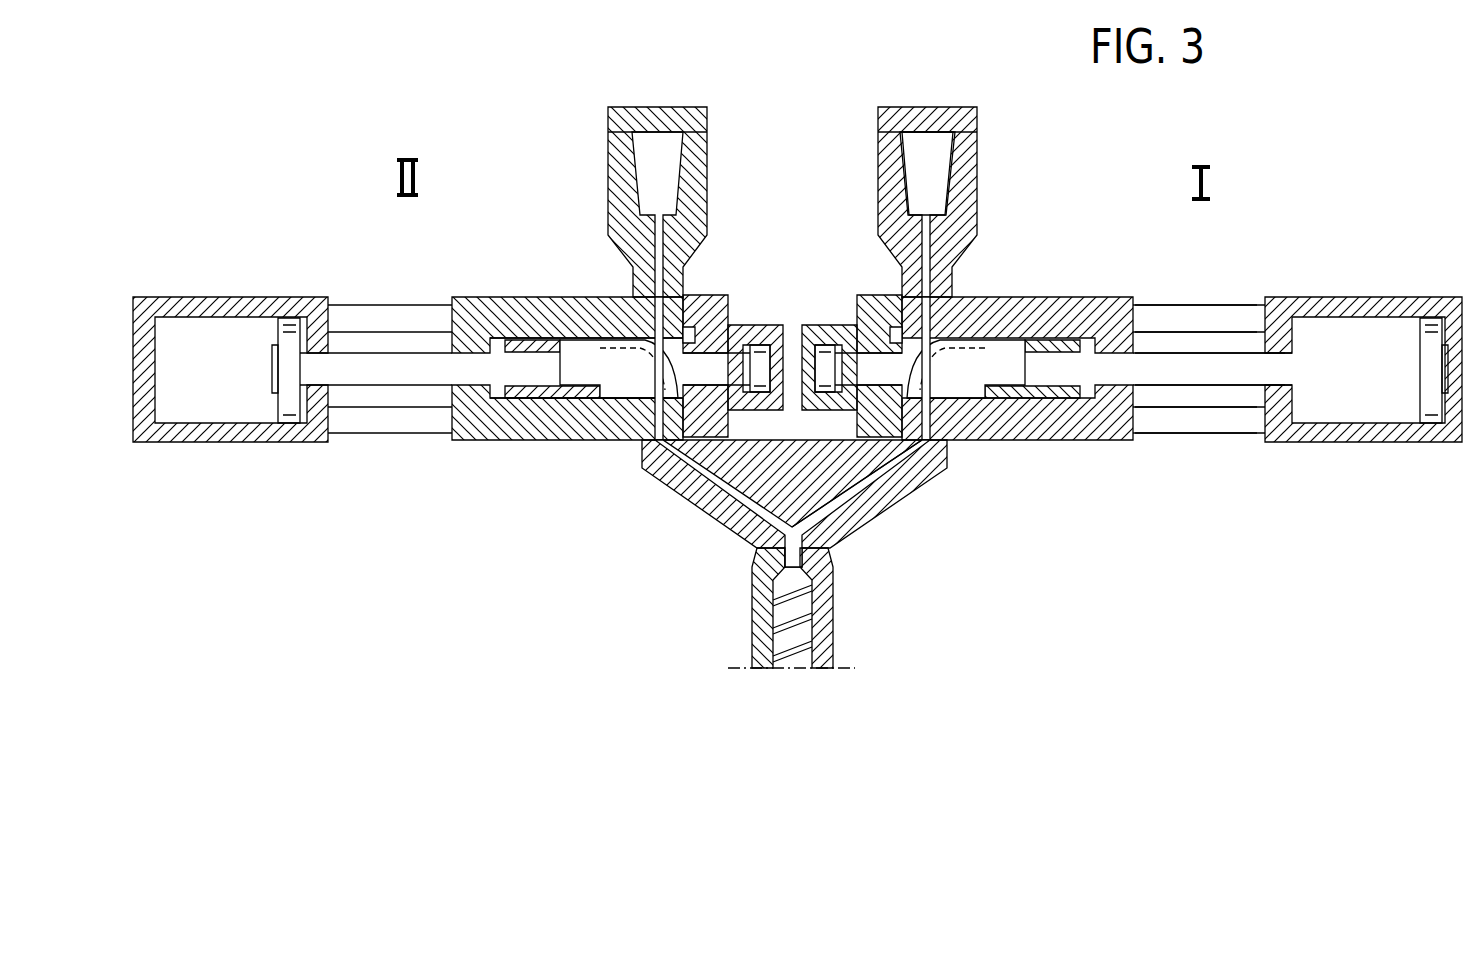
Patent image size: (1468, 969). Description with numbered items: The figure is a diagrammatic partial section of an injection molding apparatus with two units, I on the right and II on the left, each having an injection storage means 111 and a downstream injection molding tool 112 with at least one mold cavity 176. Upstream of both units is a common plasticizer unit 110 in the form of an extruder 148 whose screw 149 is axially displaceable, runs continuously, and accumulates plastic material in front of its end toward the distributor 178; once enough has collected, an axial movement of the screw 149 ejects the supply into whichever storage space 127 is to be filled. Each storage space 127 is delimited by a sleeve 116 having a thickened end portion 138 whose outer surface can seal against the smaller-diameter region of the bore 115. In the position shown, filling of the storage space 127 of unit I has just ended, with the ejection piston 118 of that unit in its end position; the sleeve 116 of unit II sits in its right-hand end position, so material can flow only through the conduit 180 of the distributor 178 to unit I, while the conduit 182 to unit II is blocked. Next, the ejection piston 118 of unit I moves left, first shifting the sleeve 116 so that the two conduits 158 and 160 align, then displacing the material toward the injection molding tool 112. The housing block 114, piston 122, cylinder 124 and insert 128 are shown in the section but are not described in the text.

The plasticizer unit 110 is at (866, 690).
The injection storage means 111 is at (596, 493).
The injection molding tool 112 is at (876, 186).
The housing block 114 is at (1120, 442).
The bore 115 is at (550, 338).
The sleeve 116 is at (562, 442).
The ejection piston 118 is at (382, 365).
The piston 122 is at (290, 443).
The cylinder 124 is at (233, 443).
The storage space 127 is at (1072, 335).
The insert sleeve 128 is at (485, 442).
The thickened end portion 138 is at (508, 337).
The extruder 148 is at (835, 637).
The screw 149 is at (793, 640).
The conduit 158 is at (700, 330).
The conduit 160 is at (675, 330).
The mold cavity 176 is at (950, 185).
The distributor 178 is at (883, 508).
The conduit 180 is at (912, 463).
The conduit 182 is at (720, 497).